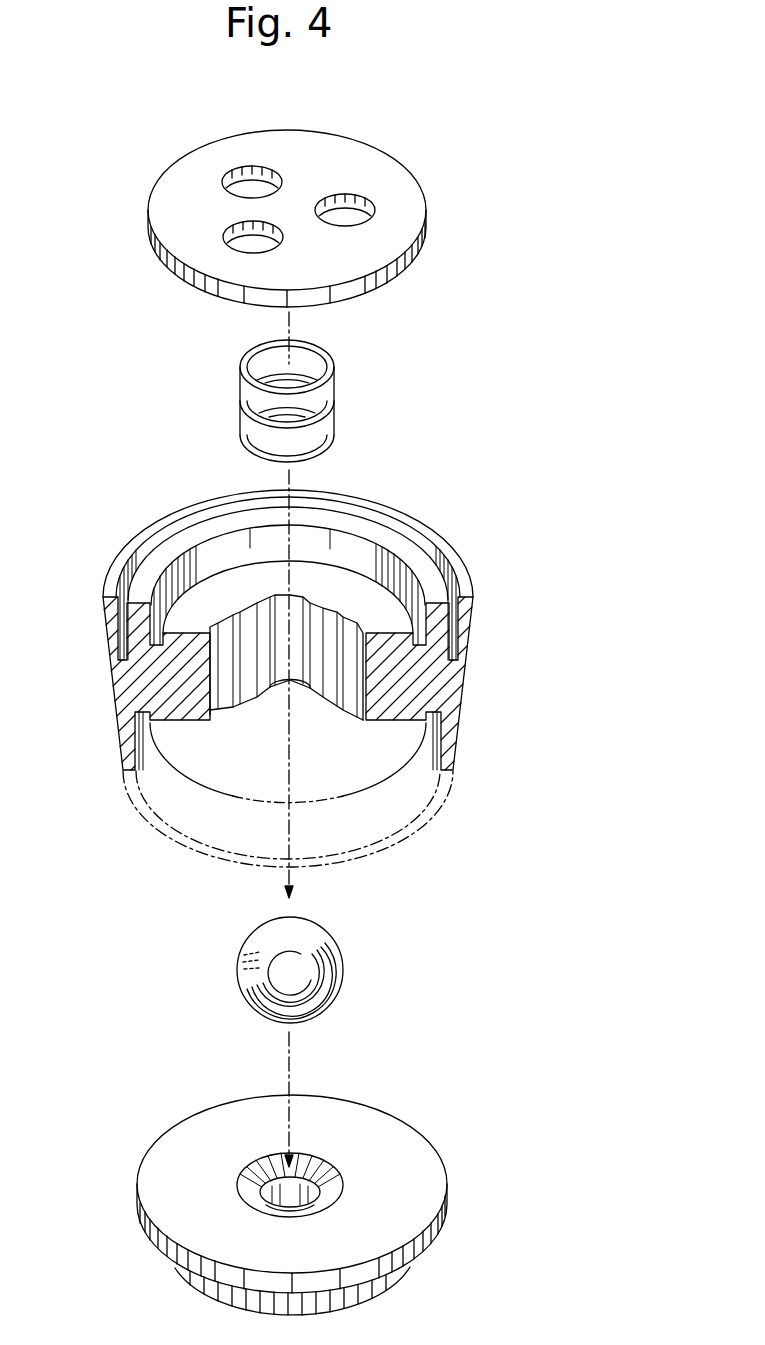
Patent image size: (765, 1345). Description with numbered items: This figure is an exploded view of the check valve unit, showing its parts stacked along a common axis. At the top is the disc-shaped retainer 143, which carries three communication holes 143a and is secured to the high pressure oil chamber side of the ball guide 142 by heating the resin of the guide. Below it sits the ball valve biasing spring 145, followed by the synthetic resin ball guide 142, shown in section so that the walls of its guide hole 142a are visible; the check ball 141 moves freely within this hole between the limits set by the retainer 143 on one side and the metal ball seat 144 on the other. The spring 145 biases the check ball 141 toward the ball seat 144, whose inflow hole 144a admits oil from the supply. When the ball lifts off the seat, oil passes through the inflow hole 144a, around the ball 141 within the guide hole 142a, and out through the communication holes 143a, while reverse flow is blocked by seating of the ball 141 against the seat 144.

The check ball 141 is at (343, 972).
The ball guide 142 is at (433, 677).
The guide hole 142a is at (332, 623).
The retainer 143 is at (405, 212).
The communication holes 143a is at (252, 168).
The ball seat 144 is at (178, 1137).
The inflow hole 144a is at (317, 1162).
The ball valve biasing spring 145 is at (332, 397).